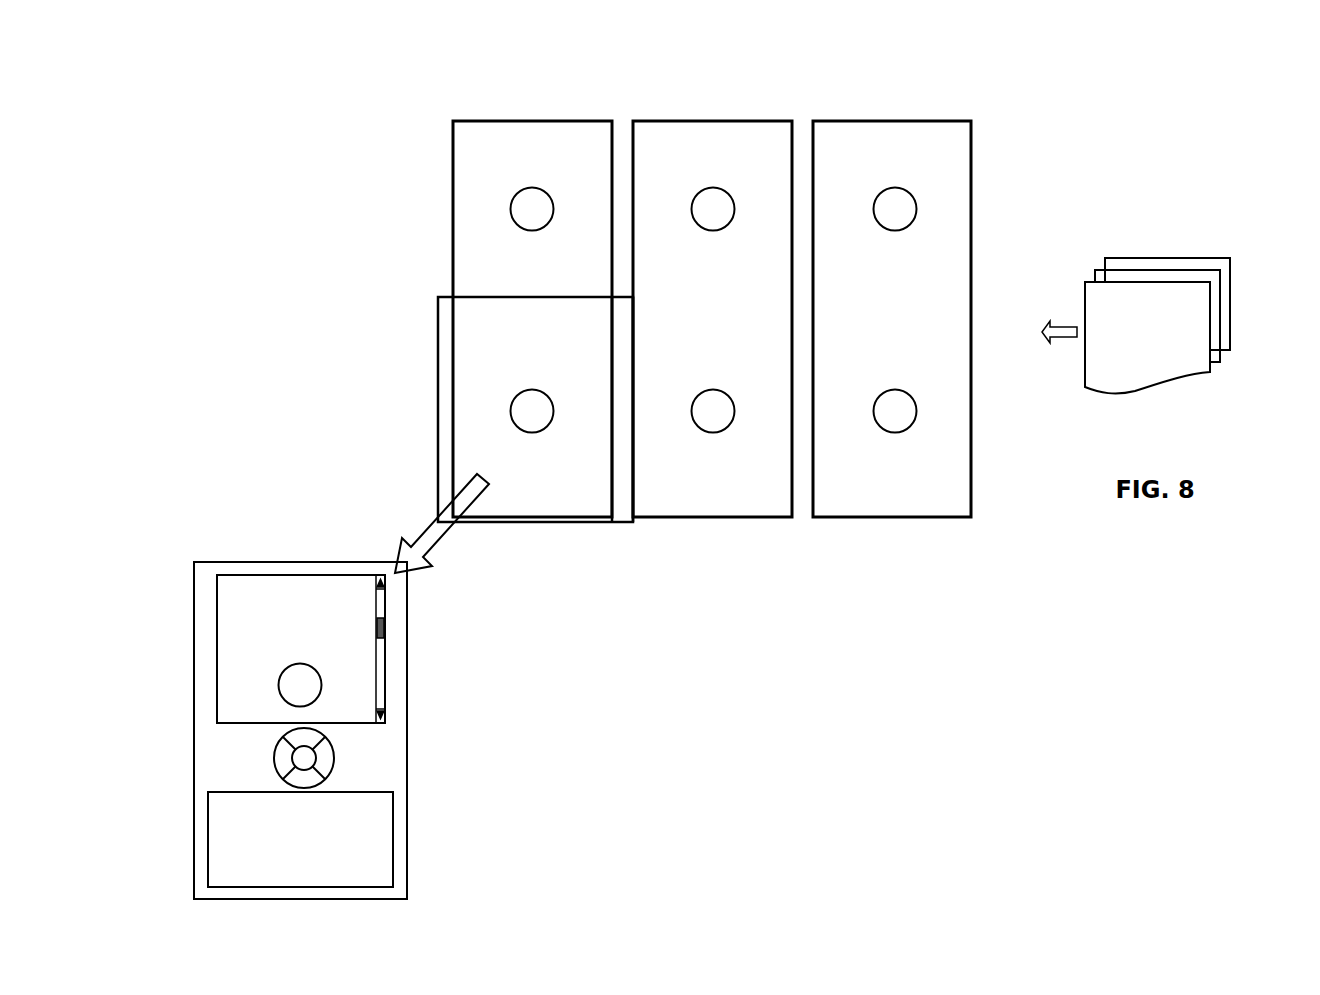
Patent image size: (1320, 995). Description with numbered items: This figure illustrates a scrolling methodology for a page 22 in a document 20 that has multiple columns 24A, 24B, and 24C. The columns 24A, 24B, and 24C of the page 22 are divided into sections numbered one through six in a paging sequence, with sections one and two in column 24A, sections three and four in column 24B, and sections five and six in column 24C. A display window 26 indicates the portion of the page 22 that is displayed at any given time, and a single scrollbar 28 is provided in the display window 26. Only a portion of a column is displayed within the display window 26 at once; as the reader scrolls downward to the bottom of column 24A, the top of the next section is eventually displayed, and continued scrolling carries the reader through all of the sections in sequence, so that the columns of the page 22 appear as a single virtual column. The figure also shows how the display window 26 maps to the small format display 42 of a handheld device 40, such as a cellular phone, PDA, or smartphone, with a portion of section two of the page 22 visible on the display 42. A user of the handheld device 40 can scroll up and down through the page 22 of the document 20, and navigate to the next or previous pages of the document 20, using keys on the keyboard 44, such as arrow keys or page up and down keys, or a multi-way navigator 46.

The document 20 is at (1202, 270).
The page 22 is at (1220, 290).
The column 24A is at (532, 114).
The column 24B is at (710, 114).
The column 24C is at (893, 114).
The display window 26 is at (438, 424).
The scrollbar 28 is at (623, 534).
The handheld device 40 is at (210, 562).
The display 42 is at (217, 637).
The keyboard 44 is at (208, 818).
The multi-way navigator 46 is at (335, 764).